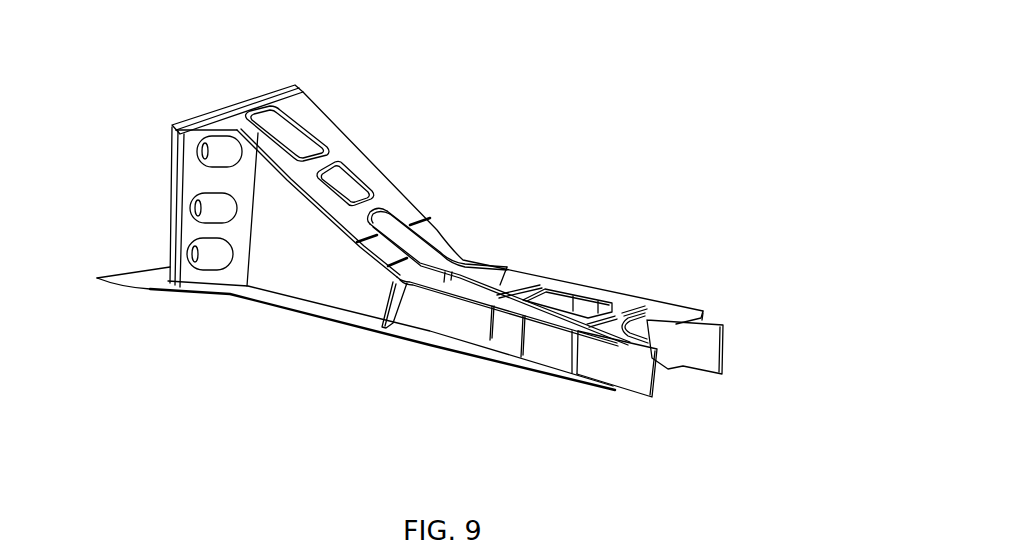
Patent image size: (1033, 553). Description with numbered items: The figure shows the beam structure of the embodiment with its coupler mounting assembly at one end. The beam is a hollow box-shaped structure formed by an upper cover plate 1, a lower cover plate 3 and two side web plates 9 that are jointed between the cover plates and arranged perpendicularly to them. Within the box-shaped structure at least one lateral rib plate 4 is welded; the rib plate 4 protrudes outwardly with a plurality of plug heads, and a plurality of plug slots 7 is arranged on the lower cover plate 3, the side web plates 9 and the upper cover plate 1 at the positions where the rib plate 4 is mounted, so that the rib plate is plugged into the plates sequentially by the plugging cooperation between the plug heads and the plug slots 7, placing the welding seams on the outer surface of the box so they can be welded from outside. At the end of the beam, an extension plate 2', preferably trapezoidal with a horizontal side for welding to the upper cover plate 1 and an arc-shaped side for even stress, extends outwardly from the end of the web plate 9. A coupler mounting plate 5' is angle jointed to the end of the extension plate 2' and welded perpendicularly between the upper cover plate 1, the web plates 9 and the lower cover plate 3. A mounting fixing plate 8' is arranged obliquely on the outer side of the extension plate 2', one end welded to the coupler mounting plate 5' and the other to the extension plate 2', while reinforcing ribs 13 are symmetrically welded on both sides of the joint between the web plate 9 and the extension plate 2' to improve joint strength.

The upper cover plate 1 is at (473, 355).
The extension plate 2' is at (355, 339).
The lower cover plate 3 is at (340, 152).
The lateral rib plate 4 is at (535, 285).
The coupler mounting plate 5' is at (187, 85).
The plug slot 7 is at (630, 308).
The mounting fixing plate 8' is at (163, 207).
The web plate 9 is at (697, 345).
The reinforcing rib 13 is at (385, 305).